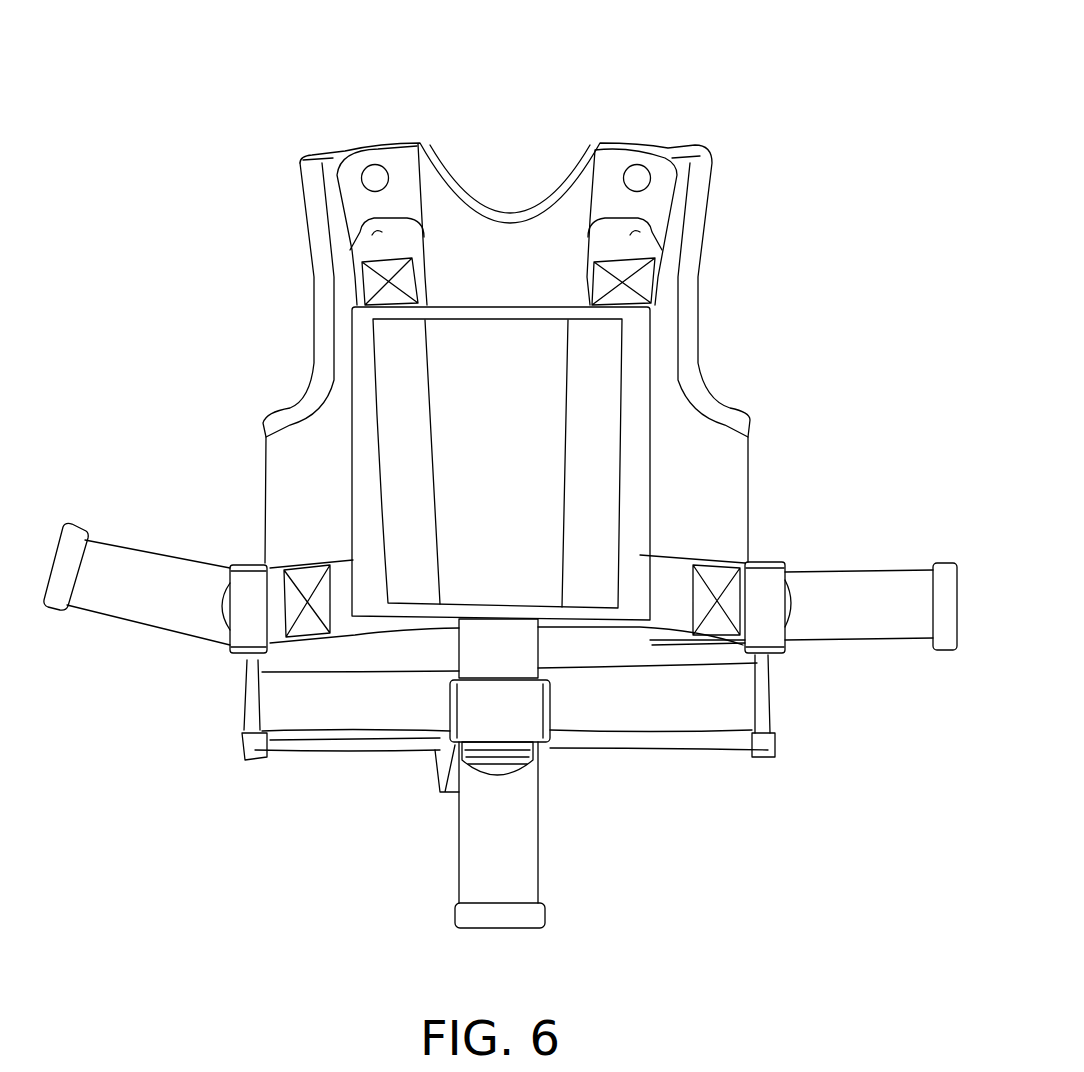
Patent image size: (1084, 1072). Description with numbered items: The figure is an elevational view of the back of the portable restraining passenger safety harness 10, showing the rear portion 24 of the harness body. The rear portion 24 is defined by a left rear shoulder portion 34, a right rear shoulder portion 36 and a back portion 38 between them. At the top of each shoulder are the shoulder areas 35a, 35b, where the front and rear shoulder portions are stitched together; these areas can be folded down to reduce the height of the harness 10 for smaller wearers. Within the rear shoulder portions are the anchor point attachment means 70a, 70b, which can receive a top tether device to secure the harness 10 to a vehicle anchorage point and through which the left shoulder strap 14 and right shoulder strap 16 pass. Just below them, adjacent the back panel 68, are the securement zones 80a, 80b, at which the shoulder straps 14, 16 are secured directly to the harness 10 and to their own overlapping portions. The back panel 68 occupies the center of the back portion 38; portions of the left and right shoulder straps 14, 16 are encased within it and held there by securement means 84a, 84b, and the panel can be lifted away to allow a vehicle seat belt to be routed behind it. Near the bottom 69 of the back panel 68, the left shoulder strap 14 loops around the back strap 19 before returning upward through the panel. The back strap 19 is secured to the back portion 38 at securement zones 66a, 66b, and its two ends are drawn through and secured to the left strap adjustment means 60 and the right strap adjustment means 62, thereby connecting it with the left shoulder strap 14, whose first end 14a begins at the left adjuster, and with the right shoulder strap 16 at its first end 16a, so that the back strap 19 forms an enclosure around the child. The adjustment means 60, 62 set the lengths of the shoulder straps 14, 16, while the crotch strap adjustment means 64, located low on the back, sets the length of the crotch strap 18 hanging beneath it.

The portable restraining passenger safety harness 10 is at (177, 123).
The left shoulder strap 14 is at (402, 237).
The first end of left shoulder strap 14a is at (75, 538).
The right shoulder strap 16 is at (607, 236).
The first end of right shoulder strap 16a is at (948, 650).
The crotch strap 18 is at (480, 868).
The back strap 19 is at (667, 615).
The rear portion 24 is at (323, 425).
The left rear shoulder portion 34 is at (333, 165).
The left shoulder area 35a is at (338, 145).
The right shoulder area 35b is at (657, 137).
The right rear shoulder portion 36 is at (683, 161).
The back portion 38 is at (382, 660).
The left strap adjustment means 60 is at (250, 597).
The right strap adjustment means 62 is at (768, 590).
The crotch strap adjustment means 64 is at (512, 712).
The securement zone 66a is at (303, 585).
The securement zone 66b is at (715, 578).
The back panel 68 is at (511, 474).
The bottom of the back panel 69 is at (367, 618).
The anchor point attachment means 70a is at (398, 170).
The anchor point attachment means 70b is at (607, 173).
The securement zone 80a is at (408, 282).
The securement zone 80b is at (596, 279).
The securement means 84a is at (428, 377).
The securement means 84b is at (563, 573).